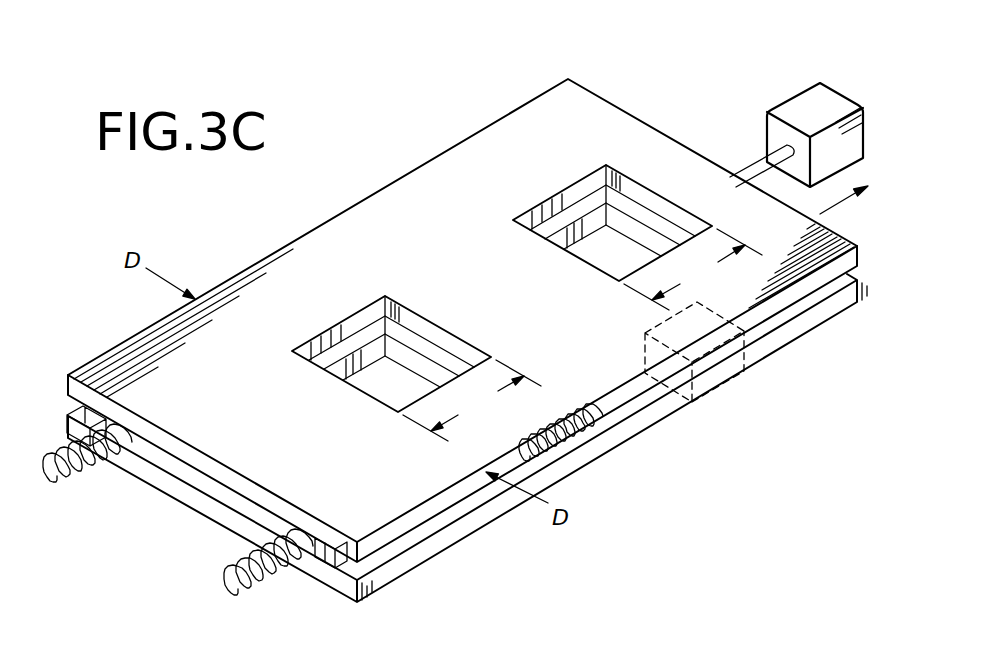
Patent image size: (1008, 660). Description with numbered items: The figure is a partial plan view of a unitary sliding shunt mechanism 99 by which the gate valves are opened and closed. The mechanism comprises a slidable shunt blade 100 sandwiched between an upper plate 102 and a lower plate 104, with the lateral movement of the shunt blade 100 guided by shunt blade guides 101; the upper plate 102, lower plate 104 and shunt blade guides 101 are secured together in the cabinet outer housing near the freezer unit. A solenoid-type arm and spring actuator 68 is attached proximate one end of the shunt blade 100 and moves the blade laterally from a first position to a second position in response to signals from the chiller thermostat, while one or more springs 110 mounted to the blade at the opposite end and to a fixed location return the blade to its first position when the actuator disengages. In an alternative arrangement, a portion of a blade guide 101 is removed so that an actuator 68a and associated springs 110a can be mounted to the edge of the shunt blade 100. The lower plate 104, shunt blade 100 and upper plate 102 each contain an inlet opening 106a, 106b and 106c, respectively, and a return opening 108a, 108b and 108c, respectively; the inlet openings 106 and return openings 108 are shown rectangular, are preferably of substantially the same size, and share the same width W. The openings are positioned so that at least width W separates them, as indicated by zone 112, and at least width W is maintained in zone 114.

The unitary sliding shunt mechanism 99 is at (425, 120).
The shunt blade 100 is at (466, 358).
The shunt blade guides 101 is at (267, 659).
The upper plate 102 is at (198, 460).
The lower plate 104 is at (440, 537).
The inlet openings 106 is at (397, 311).
The inlet opening of bottom plate 106a is at (372, 356).
The inlet opening of shunt blade 106b is at (360, 342).
The inlet opening of top plate 106c is at (320, 345).
The return openings 108 is at (637, 191).
The return opening of bottom plate 108a is at (598, 222).
The return opening of shunt blade 108b is at (593, 203).
The return opening of top plate 108c is at (573, 193).
The springs 110 is at (90, 480).
The associated springs 110a is at (592, 450).
The zone between openings 112 is at (543, 255).
The zone 114 is at (328, 383).
The actuator 68 is at (816, 103).
The actuator 68a is at (746, 384).